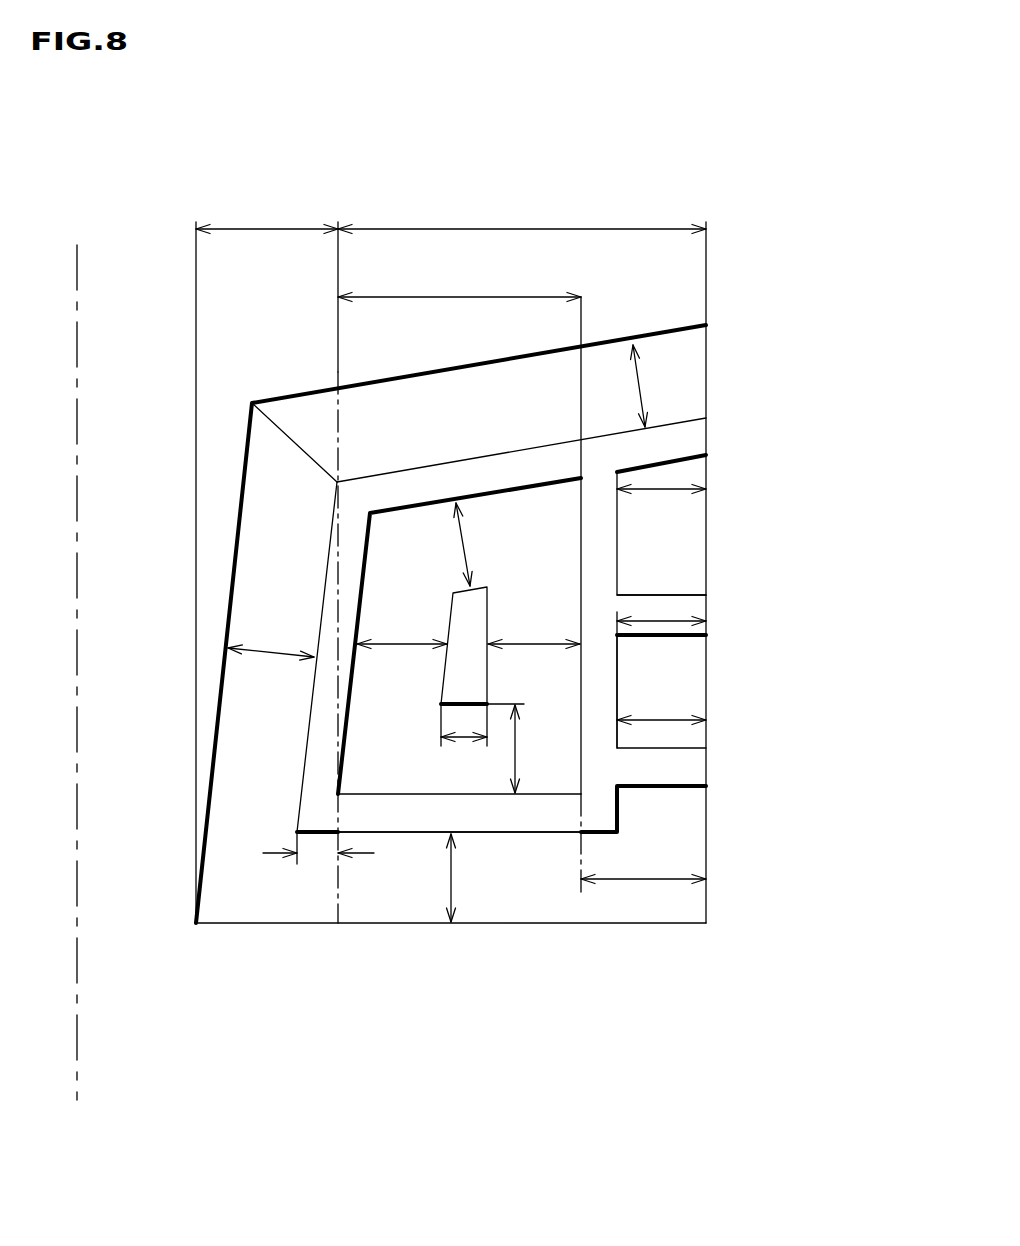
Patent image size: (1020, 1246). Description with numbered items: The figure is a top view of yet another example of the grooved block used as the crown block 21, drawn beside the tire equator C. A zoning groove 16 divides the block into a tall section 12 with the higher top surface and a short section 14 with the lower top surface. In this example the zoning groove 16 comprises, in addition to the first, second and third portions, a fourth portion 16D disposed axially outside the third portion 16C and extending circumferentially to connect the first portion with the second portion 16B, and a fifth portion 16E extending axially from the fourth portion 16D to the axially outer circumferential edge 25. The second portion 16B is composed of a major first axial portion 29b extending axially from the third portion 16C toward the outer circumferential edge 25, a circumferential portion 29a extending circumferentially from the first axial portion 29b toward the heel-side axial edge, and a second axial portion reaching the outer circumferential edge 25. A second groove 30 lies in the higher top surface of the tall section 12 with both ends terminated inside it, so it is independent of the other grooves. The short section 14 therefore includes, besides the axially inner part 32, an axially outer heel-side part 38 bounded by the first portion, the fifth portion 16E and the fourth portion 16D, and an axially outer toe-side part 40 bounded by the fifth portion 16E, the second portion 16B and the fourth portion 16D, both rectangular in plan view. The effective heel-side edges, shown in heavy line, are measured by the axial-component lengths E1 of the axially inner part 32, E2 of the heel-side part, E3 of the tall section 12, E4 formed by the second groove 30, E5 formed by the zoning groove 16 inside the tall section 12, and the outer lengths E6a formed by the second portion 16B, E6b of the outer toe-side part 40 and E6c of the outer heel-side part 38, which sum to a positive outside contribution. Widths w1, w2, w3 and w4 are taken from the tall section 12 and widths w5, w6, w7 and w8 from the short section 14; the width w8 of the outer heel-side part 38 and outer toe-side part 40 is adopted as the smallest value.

The crown block 21 is at (737, 282).
The short section 14 is at (677, 380).
The zoning groove 16 is at (672, 447).
The axially inner part 32 is at (283, 477).
The tall section 12 is at (398, 583).
The second groove 30 is at (467, 617).
The axially outer heel-side part 38 is at (665, 527).
The fifth portion 16E is at (650, 608).
The axially outer toe-side part 40 is at (665, 663).
The fourth portion 16D is at (595, 695).
The second portion 16B is at (672, 768).
The axially outer circumferential edge 25 is at (707, 832).
The circumferential portion 29a is at (597, 812).
The first axial portion 29b is at (520, 813).
The third portion 16C is at (320, 790).
The tire equator C is at (76, 658).
The length of the axial component of the heel-side block edge of the axially inner p E1 is at (267, 212).
The length of the axial component of the heel-side block edge of the heel-side part E2 is at (522, 212).
The length of the axial component of the heel-side block edge of the tall section E3 is at (459, 279).
The length of the axial component of the heel-side block edge formed by the second g E4 is at (465, 742).
The length of the axial component of the heel-side block edge positioned axially ins E5 is at (317, 855).
The length of the axial component of the heel-side block edge formed by the second p E6a is at (643, 880).
The length of the axial component of the heel-side block edge of the axially outer t E6b is at (675, 618).
The length of the axial component of the heel-side block edge of the axially outer h E6c is at (663, 488).
The width w1 is at (484, 544).
The width w2 is at (402, 629).
The width w3 is at (538, 749).
The width w4 is at (534, 629).
The width w5 is at (640, 382).
The width w6 is at (272, 653).
The width w7 is at (452, 880).
The width w8 is at (663, 720).